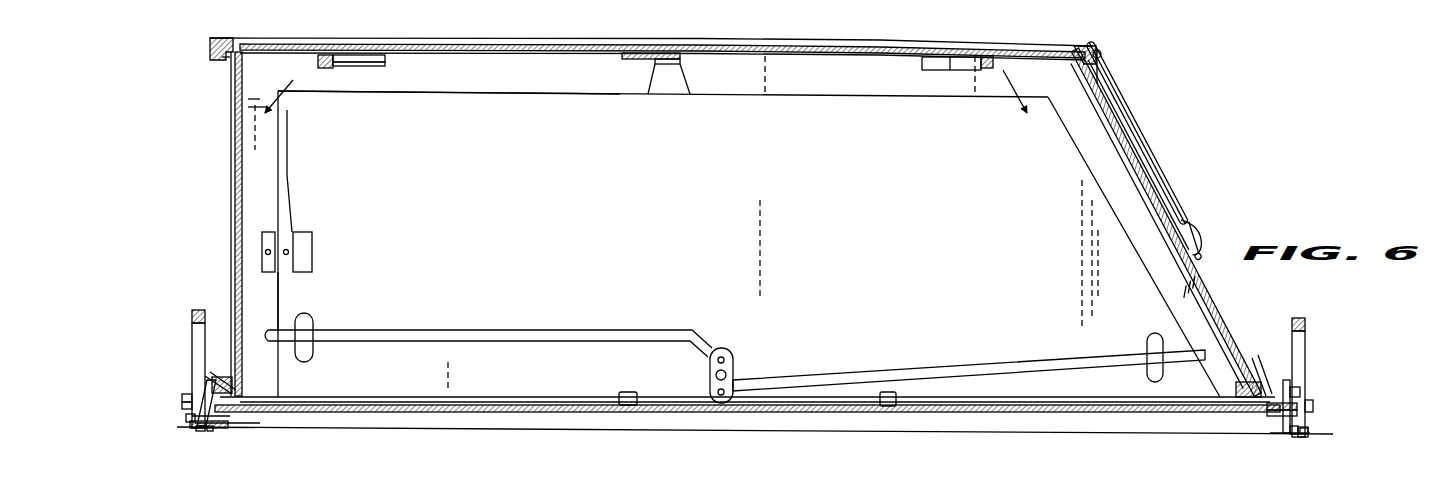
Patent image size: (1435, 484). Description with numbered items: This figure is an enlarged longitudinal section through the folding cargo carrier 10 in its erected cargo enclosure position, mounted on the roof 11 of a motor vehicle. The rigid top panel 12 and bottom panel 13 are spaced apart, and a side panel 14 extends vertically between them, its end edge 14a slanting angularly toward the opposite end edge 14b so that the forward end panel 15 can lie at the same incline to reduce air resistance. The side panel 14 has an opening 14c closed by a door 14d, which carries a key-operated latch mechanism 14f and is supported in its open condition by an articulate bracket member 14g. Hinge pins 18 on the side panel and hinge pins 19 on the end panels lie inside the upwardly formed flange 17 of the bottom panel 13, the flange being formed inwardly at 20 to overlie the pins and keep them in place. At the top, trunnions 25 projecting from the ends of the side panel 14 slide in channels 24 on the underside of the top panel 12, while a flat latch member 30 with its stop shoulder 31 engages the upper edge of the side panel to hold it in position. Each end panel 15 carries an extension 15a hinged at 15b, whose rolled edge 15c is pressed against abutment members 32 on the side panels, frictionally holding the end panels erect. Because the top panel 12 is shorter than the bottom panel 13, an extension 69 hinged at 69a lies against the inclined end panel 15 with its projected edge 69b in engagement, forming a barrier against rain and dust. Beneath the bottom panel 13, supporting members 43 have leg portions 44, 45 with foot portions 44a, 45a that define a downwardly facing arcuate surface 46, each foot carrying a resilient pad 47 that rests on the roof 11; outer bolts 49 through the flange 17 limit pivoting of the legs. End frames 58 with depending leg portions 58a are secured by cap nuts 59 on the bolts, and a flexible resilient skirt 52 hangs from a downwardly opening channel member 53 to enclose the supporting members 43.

The folding cargo carrier 10 is at (195, 110).
The roof 11 is at (392, 432).
The top panel 12 is at (790, 50).
The bottom panel 13 is at (528, 404).
The side panel 14 is at (703, 238).
The end edge 14a is at (1214, 302).
The end edge 14b is at (232, 155).
The opening 14c is at (620, 96).
The door 14d is at (678, 375).
The latch mechanism 14f is at (698, 340).
The articulate bracket member 14g is at (292, 206).
The end panel 15 is at (233, 208).
The extension 15a is at (303, 54).
The hinge connection 15b is at (1155, 44).
The rolled edge 15c is at (330, 70).
The upwardly formed flange 17 is at (205, 380).
The hinge pin 18 is at (478, 385).
The hinge pin 19 is at (233, 384).
The inwardly formed portion 20 is at (212, 384).
The channel 24 is at (212, 52).
The trunnion 25 is at (225, 62).
The latch member 30 is at (652, 66).
The stop shoulder 31 is at (684, 66).
The abutment member 32 is at (350, 64).
The supporting member 43 is at (226, 424).
The leg portion 44 is at (218, 416).
The foot portion 44a is at (235, 461).
The leg portion 45 is at (1275, 404).
The foot portion 45a is at (1285, 469).
The arcuate surface 46 is at (206, 432).
The flexible resilient pad 47 is at (195, 432).
The outer bolt 49 is at (240, 398).
The flexible resilient skirt 52 is at (190, 418).
The channel member 53 is at (185, 393).
The end frame 58 is at (199, 312).
The depending leg portion 58a is at (1365, 337).
The cap nut 59 is at (185, 401).
The extension 69 is at (1160, 160).
The hinge connection 69a is at (1102, 53).
The projected edge 69b is at (1200, 265).